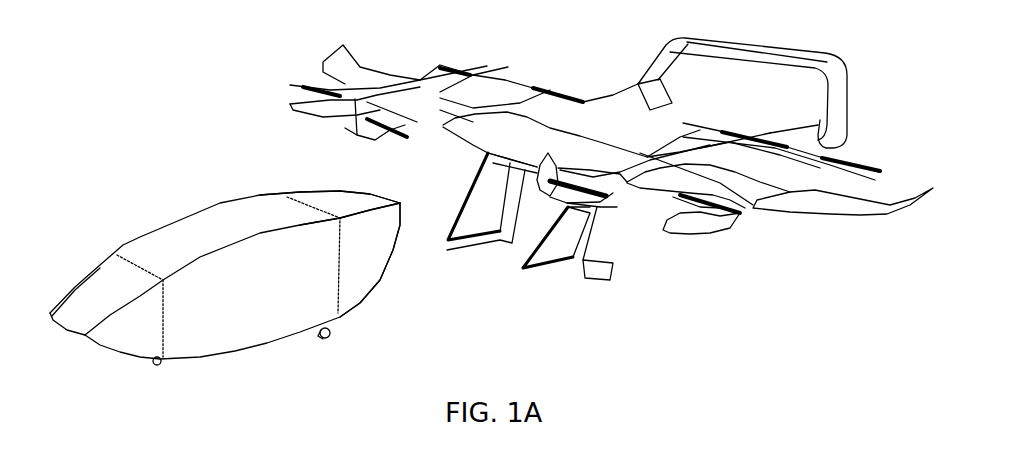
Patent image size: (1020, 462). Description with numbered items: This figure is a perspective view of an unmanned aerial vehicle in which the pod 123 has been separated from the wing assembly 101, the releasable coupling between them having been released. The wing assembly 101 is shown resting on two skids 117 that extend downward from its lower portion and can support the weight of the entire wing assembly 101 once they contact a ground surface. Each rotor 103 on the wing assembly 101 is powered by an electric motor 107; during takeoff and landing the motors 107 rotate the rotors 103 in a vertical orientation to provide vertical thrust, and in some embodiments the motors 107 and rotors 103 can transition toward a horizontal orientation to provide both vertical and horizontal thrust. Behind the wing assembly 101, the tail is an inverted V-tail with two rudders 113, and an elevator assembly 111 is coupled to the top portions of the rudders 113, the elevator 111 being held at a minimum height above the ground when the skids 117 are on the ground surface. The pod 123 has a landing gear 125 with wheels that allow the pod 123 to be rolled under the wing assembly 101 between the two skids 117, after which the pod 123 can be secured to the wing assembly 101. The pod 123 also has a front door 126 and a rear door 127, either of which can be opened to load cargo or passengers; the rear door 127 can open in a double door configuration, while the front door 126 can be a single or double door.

The wing assembly 101 is at (600, 158).
The rotor 103 is at (310, 92).
The electric motor 107 is at (358, 137).
The elevator assembly 111 is at (800, 53).
The rudder 113 is at (670, 57).
The skid 117 is at (470, 250).
The pod 123 is at (240, 330).
The landing gear 125 is at (331, 335).
The front door 126 is at (85, 293).
The rear door 127 is at (372, 270).